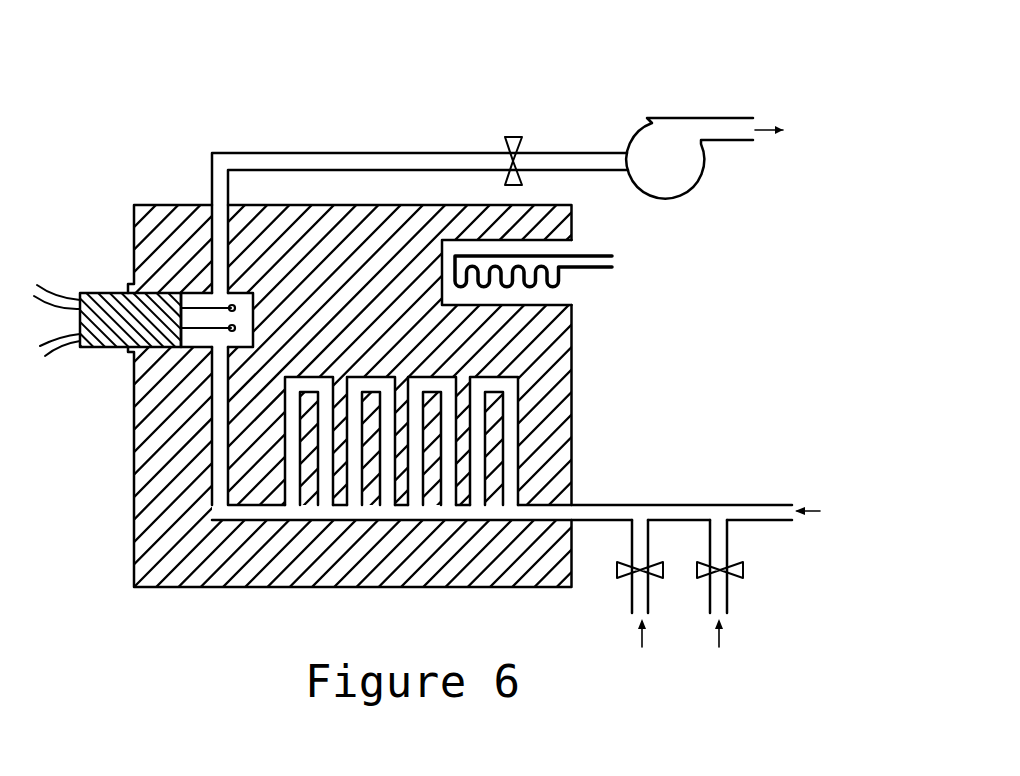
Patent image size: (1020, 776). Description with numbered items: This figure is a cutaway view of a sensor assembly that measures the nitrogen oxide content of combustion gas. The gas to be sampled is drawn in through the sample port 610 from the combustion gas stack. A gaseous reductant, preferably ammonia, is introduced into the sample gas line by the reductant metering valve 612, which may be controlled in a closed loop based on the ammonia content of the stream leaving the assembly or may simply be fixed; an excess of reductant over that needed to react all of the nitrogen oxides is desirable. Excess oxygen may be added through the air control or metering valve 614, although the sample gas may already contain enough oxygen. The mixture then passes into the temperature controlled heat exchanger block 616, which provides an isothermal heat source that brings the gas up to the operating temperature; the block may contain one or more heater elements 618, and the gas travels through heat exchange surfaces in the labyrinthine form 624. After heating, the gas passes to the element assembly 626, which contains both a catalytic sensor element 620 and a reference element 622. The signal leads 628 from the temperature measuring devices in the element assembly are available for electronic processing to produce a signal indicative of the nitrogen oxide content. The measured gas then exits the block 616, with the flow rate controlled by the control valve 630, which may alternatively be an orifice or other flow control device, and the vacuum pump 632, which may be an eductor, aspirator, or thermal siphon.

The sample port 610 is at (700, 503).
The reductant metering valve 612 is at (745, 565).
The air control or metering valve 614 is at (617, 573).
The temperature controlled heat exchanger block 616 is at (572, 384).
The heater element 618 is at (600, 270).
The catalytic sensor element 620 is at (221, 305).
The reference element 622 is at (203, 350).
The labyrinthine heat exchange surfaces 624 is at (518, 455).
The element assembly 626 is at (117, 287).
The signal leads 628 is at (62, 313).
The control valve 630 is at (519, 137).
The vacuum pump 632 is at (683, 193).